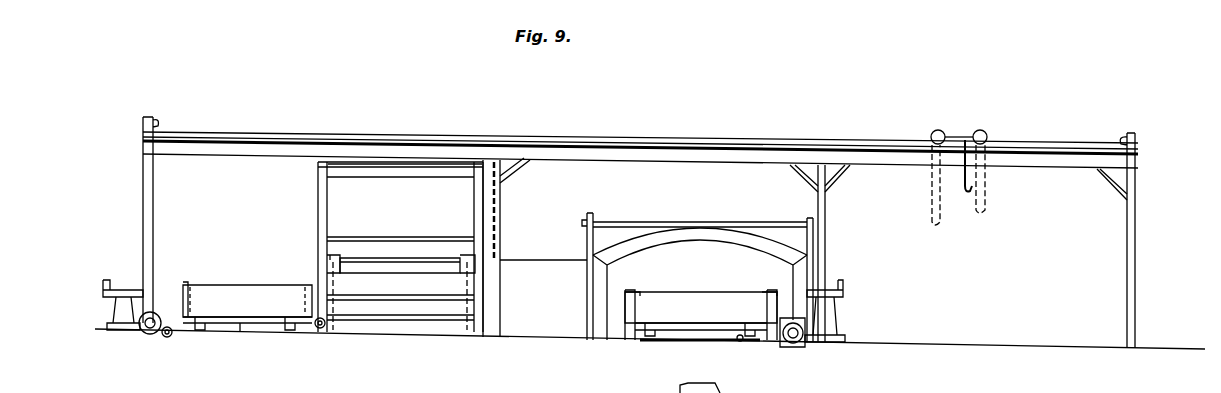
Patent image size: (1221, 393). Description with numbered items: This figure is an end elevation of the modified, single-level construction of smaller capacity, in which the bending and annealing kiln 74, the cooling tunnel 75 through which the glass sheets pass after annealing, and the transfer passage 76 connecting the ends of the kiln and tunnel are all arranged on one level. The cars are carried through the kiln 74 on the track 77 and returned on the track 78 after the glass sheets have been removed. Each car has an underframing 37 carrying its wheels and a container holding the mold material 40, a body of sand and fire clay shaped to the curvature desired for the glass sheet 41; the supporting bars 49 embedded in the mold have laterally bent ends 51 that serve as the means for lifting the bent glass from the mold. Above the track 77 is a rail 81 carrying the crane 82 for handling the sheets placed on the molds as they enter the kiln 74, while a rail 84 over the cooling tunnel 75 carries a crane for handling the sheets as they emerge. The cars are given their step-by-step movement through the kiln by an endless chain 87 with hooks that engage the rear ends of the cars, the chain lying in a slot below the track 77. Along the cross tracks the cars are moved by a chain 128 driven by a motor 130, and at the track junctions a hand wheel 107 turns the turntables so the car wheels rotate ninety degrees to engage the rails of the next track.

The rail 81 is at (1035, 148).
The crane 82 is at (960, 119).
The rail 84 is at (372, 162).
The cooling tunnel 75 is at (374, 240).
The glass sheet 41 is at (393, 262).
The supporting bar 49 is at (462, 264).
The transfer passage 76 is at (548, 309).
The bending and annealing kiln 74 is at (722, 232).
The hand wheel 107 is at (118, 290).
The track 78 is at (215, 330).
The mold material 40 is at (254, 313).
The underframing 37 is at (267, 318).
The laterally bent ends of the supporting bars 51 is at (330, 258).
The endless chain 87 is at (703, 345).
The track 77 is at (740, 340).
The chain 128 is at (690, 340).
The motor 130 is at (805, 348).